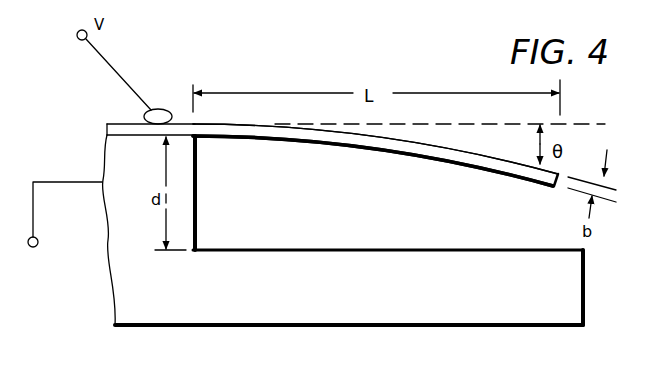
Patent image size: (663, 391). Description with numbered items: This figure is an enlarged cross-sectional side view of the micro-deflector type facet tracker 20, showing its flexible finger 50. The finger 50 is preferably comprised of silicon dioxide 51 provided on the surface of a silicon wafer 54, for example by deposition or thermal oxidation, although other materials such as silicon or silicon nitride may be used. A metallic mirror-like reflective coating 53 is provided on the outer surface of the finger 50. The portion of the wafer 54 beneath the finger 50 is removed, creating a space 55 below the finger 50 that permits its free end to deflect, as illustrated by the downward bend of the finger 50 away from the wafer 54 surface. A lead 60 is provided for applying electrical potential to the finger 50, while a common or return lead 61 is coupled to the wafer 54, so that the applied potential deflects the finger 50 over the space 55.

The facet tracker 20 is at (366, 69).
The flexible finger 50 is at (289, 155).
The silicon dioxide 51 is at (378, 143).
The reflective coating 53 is at (469, 148).
The silicon wafer 54 is at (126, 168).
The space 55 is at (372, 242).
The lead 60 is at (142, 90).
The common or return lead 61 is at (35, 209).